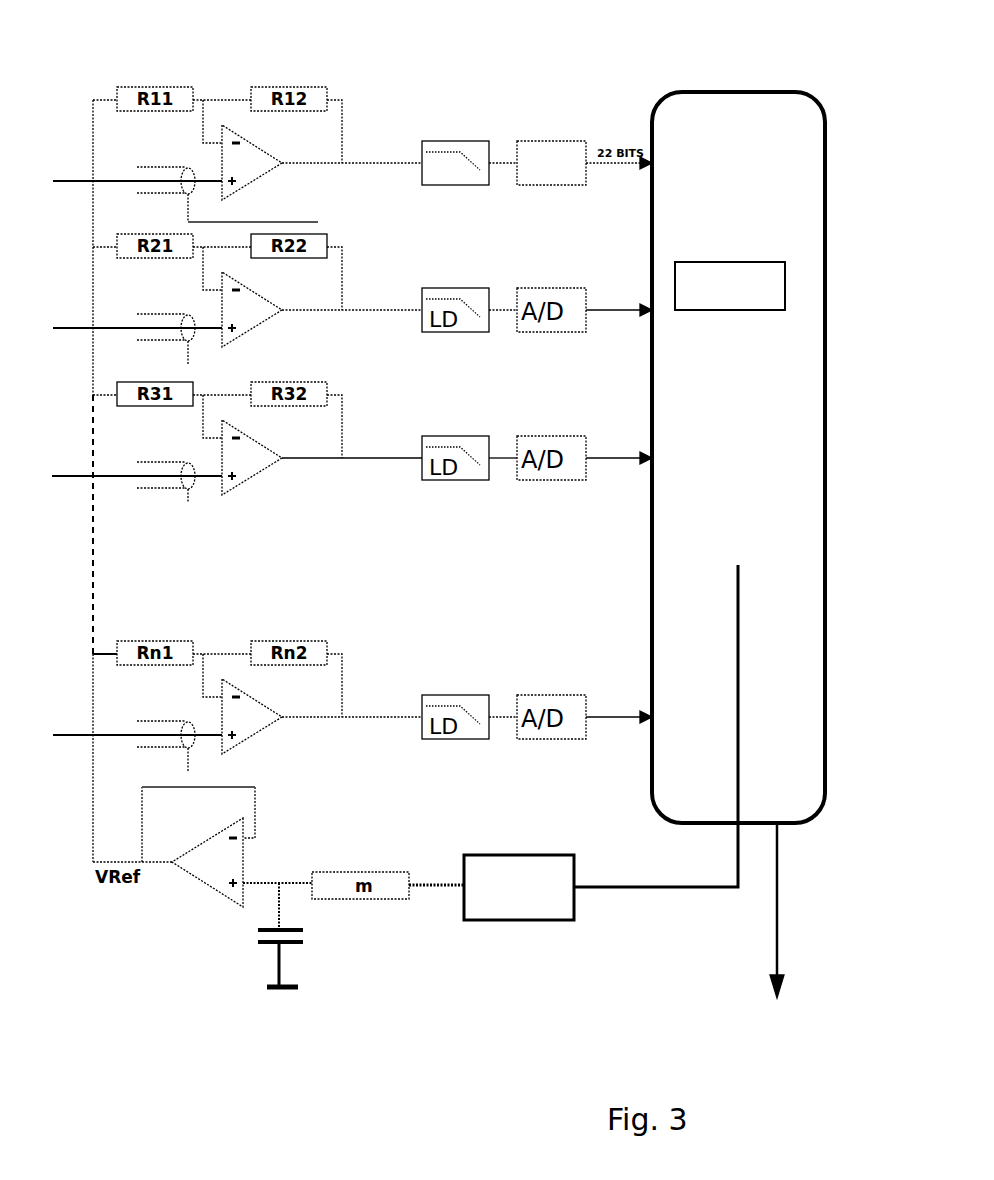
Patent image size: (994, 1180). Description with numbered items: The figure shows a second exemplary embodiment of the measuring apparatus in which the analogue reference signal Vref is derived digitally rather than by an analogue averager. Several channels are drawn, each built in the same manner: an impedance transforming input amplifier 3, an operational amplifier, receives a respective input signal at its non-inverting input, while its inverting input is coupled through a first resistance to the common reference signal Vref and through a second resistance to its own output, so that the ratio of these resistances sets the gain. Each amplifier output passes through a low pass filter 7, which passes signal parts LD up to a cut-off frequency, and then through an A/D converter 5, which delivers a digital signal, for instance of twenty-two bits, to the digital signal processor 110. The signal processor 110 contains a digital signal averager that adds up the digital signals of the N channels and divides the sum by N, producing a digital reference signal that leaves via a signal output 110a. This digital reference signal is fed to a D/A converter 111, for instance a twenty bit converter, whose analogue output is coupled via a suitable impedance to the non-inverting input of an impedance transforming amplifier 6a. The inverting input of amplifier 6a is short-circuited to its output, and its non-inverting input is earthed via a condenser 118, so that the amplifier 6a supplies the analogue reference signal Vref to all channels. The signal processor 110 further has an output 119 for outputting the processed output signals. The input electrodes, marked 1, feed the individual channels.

The electrode input 1 is at (75, 182).
The input amplifier 3 is at (258, 170).
The A/D converter 5 is at (563, 133).
The low pass filter 7 is at (470, 133).
The impedance transforming amplifier 6a is at (191, 898).
The digital signal processor 110 is at (703, 107).
The signal output 110a is at (737, 839).
The D/A converter 111 is at (513, 897).
The condenser 118 is at (262, 943).
The output 119 is at (775, 950).